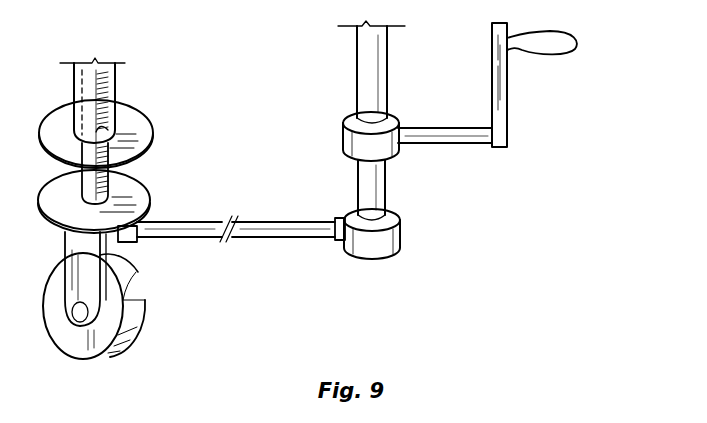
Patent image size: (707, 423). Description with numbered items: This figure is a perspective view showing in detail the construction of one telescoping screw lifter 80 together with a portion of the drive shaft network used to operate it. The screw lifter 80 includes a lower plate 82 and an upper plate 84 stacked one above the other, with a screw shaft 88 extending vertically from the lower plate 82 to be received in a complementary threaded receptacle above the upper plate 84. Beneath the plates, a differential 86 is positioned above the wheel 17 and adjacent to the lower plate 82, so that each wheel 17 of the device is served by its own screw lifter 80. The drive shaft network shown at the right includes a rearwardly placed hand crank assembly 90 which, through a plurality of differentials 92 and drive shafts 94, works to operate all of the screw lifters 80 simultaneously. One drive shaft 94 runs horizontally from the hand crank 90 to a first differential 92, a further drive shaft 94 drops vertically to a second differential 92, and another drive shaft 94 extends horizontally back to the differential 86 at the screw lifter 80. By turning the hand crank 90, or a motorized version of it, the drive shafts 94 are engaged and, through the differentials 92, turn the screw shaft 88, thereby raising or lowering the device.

The telescoping screw lifter 80 is at (30, 160).
The upper plate 84 is at (132, 125).
The lower plate 82 is at (136, 212).
The screw shaft 88 is at (126, 181).
The differential 86 is at (128, 243).
The wheel 17 is at (143, 340).
The drive shaft 94 is at (272, 232).
The differential 92 is at (344, 143).
The hand crank assembly 90 is at (507, 100).